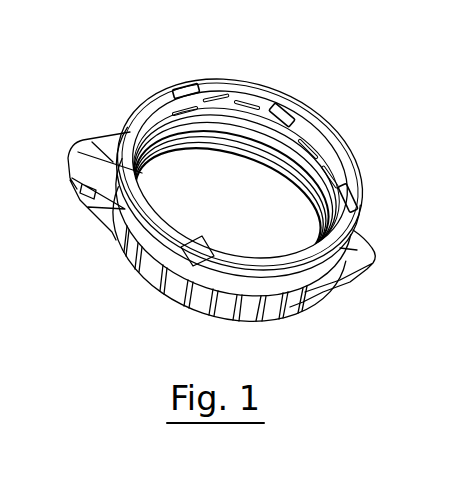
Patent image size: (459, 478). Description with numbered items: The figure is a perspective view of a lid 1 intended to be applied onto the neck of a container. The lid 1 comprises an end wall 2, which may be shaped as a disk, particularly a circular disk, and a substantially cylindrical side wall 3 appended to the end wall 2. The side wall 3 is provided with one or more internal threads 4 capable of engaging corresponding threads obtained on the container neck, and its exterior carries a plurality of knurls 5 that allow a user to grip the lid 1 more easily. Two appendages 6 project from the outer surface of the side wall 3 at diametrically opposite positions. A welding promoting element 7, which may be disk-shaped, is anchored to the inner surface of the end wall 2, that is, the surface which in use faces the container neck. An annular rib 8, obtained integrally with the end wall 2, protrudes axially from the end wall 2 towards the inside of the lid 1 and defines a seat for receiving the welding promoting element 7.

The lid 1 is at (268, 52).
The end wall 2 is at (136, 330).
The side wall 3 is at (287, 320).
The internal threads 4 is at (300, 156).
The knurls 5 is at (147, 256).
The appendages 6 is at (95, 160).
The welding promoting element 7 is at (232, 214).
The annular rib 8 is at (155, 141).